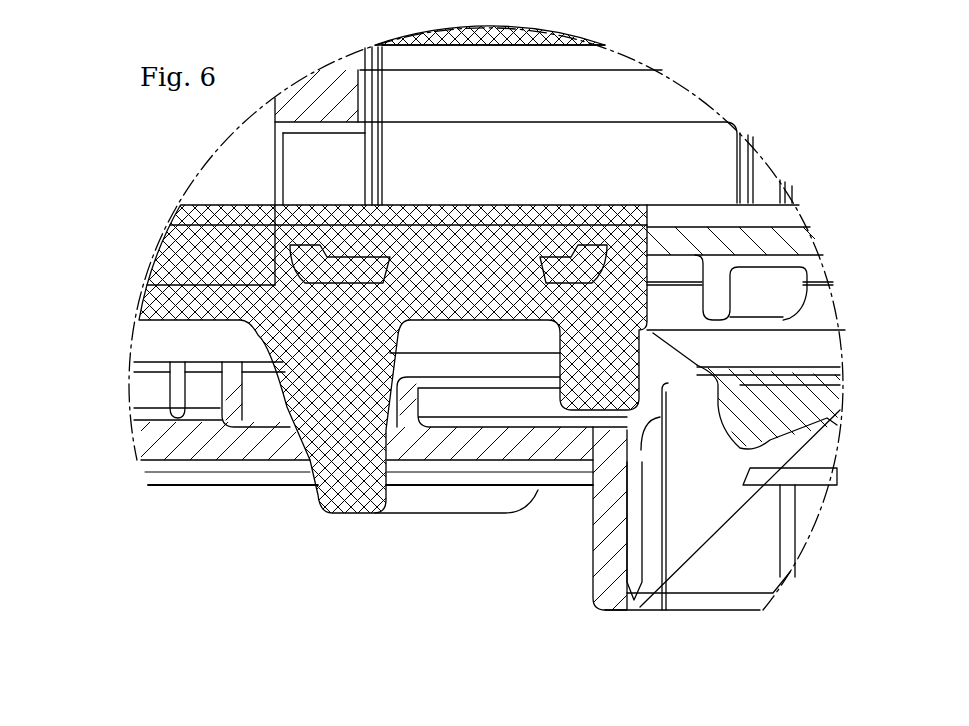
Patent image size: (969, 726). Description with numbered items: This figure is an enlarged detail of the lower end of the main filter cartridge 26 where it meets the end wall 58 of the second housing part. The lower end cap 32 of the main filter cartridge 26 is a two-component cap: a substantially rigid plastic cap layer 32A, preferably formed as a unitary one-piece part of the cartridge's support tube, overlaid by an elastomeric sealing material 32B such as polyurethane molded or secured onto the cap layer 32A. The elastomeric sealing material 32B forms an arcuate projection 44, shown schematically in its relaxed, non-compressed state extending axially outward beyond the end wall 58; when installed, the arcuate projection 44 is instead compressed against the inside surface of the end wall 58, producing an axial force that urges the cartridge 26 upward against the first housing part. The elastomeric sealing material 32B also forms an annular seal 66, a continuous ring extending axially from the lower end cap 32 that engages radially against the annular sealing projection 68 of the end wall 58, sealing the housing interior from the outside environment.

The main filter cartridge 26 is at (282, 180).
The lower end cap 32 is at (795, 240).
The substantially rigid plastic cap layer 32A is at (683, 238).
The elastomeric sealing material 32B is at (188, 309).
The arcuate projection 44 is at (292, 406).
The end wall 58 is at (520, 445).
The annular seal 66 is at (600, 377).
The annular sealing projection 68 is at (645, 418).